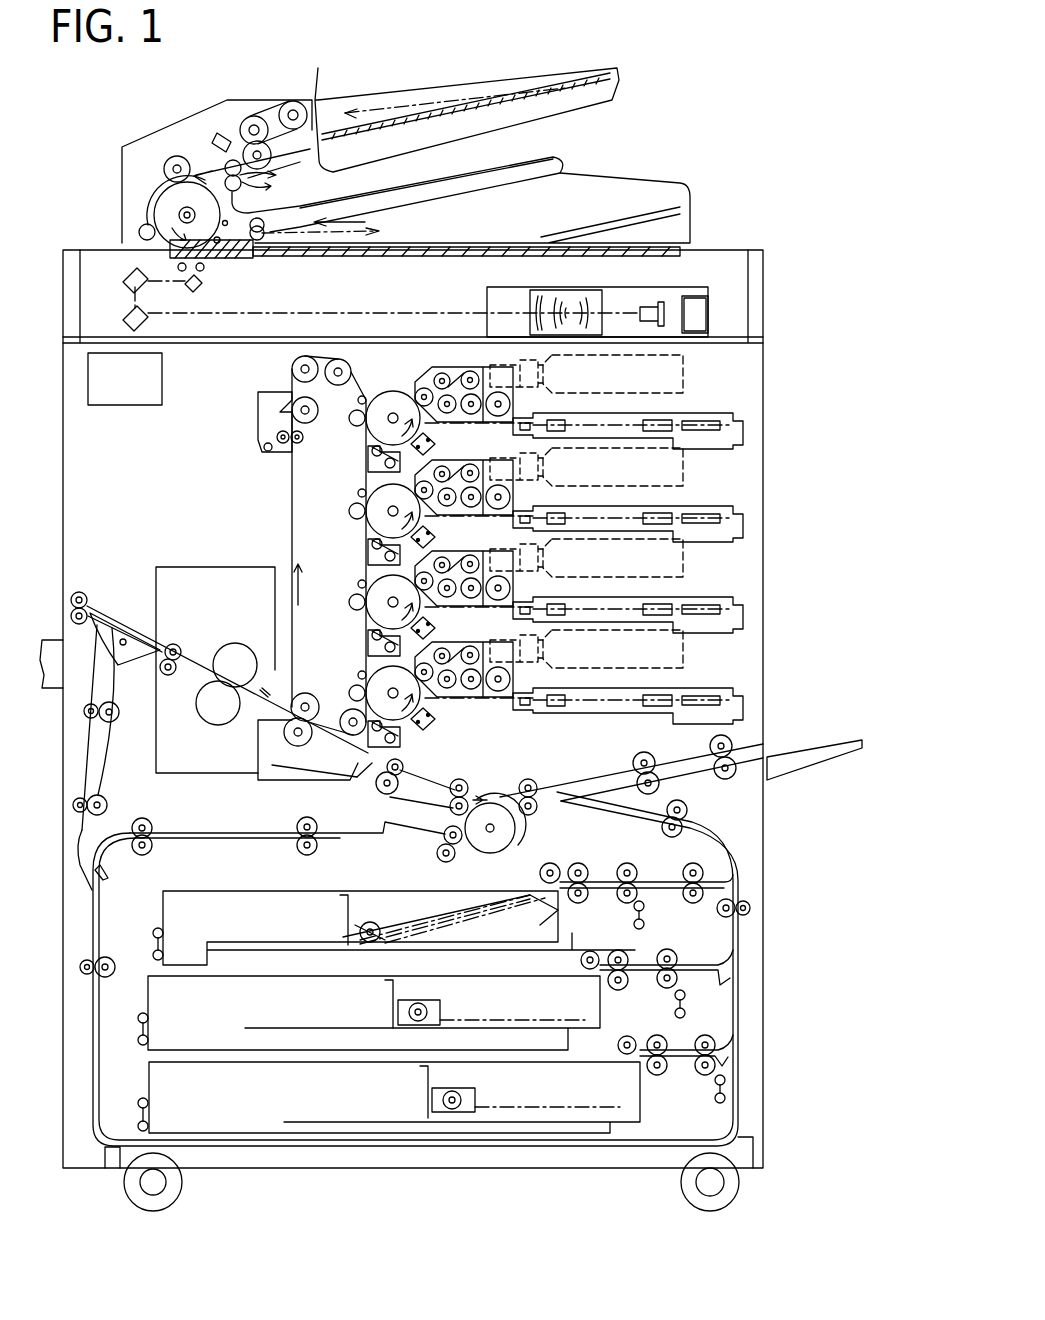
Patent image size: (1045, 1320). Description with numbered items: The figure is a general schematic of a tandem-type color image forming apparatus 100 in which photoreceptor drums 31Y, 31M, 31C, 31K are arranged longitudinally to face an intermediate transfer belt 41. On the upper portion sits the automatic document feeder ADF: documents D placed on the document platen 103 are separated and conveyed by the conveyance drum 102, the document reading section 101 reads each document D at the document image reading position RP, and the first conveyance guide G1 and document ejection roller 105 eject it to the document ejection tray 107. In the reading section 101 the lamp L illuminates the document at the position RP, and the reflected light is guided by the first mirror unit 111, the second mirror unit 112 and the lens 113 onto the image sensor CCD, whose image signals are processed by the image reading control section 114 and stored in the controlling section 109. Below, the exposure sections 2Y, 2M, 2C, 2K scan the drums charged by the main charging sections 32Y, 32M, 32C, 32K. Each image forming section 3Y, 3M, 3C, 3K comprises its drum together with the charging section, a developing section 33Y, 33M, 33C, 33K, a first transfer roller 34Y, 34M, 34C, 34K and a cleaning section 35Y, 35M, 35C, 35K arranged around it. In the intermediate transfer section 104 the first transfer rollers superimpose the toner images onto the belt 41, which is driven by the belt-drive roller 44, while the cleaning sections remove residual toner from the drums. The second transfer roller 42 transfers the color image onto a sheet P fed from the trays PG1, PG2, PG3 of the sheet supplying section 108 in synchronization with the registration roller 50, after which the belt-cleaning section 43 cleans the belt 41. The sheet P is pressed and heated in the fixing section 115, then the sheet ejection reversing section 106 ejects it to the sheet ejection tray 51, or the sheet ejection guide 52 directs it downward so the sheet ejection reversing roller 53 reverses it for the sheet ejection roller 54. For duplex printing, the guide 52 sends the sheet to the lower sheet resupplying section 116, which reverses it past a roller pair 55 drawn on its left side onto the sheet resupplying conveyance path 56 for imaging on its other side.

The image forming apparatus 100 is at (802, 96).
The document reading section 101 is at (753, 308).
The conveyance drum 102 is at (148, 211).
The document platen 103 is at (546, 72).
The intermediate transfer section 104 is at (280, 516).
The document ejection roller 105 is at (262, 184).
The sheet ejection reversing section 106 is at (88, 660).
The document ejection tray 107 is at (507, 160).
The sheet supplying section 108 is at (750, 862).
The controlling section 109 is at (145, 394).
The first mirror unit 111 is at (195, 296).
The second mirror unit 112 is at (123, 316).
The lens 113 is at (548, 291).
The image reading control section 114 is at (700, 315).
The fixing section 115 is at (184, 555).
The sheet resupplying section 116 is at (166, 877).
The exposure section 2Y is at (645, 449).
The exposure section 2M is at (628, 544).
The exposure section 2C is at (628, 635).
The exposure section 2K is at (628, 726).
The image forming section 3Y is at (565, 378).
The image forming section 3M is at (586, 467).
The image forming section 3C is at (586, 558).
The image forming section 3K is at (586, 649).
The photoreceptor drum 31Y is at (388, 398).
The photoreceptor drum 31M is at (360, 511).
The photoreceptor drum 31C is at (366, 596).
The photoreceptor drum 31K is at (367, 683).
The main charging section 32Y is at (437, 435).
The main charging section 32M is at (472, 532).
The main charging section 32C is at (472, 623).
The main charging section 32K is at (472, 718).
The developing section 33Y is at (428, 368).
The developing section 33M is at (472, 475).
The developing section 33C is at (473, 566).
The developing section 33K is at (473, 657).
The first transfer roller 34Y is at (352, 426).
The first transfer roller 34M is at (333, 515).
The first transfer roller 34C is at (335, 599).
The first transfer roller 34K is at (335, 685).
The cleaning section 35Y is at (368, 468).
The cleaning section 35M is at (353, 552).
The cleaning section 35C is at (355, 638).
The cleaning section 35K is at (413, 744).
The intermediate transfer belt 41 is at (291, 478).
The second transfer roller 42 is at (292, 744).
The belt-cleaning section 43 is at (260, 421).
The belt-drive roller 44 is at (348, 735).
The registration roller 50 is at (382, 795).
The sheet ejection tray 51 is at (52, 640).
The sheet ejection guide 52 is at (122, 633).
The sheet ejection reversing roller 53 is at (118, 722).
The sheet ejection roller 54 is at (93, 601).
The duplex conveyance roller 55 is at (112, 977).
The sheet resupplying conveyance path 56 is at (213, 832).
The automatic document feeder ADF is at (738, 144).
The image sensor CCD is at (672, 303).
The document D is at (483, 93).
The first conveyance guide G1 is at (262, 258).
The lamp L is at (202, 272).
The document image reading position RP is at (190, 268).
The sheet P is at (468, 896).
The tray PG1 is at (398, 928).
The tray PG2 is at (411, 1013).
The tray PG3 is at (431, 1097).